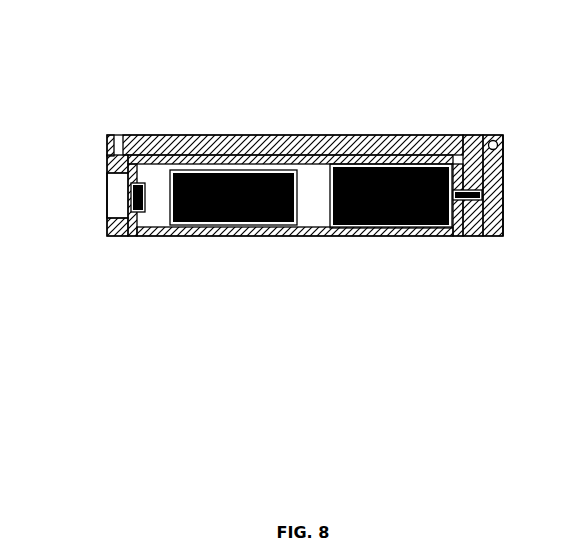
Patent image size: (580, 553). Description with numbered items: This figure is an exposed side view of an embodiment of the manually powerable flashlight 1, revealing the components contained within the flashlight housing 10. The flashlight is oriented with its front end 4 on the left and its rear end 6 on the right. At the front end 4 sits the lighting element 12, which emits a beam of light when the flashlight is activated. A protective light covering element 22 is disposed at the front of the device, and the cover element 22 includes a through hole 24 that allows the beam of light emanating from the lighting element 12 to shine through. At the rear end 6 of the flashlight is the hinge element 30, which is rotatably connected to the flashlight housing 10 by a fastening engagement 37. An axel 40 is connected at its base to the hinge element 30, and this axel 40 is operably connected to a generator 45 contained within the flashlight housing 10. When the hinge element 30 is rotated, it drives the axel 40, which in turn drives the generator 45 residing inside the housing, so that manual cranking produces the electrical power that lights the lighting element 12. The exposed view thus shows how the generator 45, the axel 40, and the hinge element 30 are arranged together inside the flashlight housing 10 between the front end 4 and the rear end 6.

The manually powerable flashlight 1 is at (278, 118).
The front end 4 is at (89, 248).
The rear end 6 is at (530, 250).
The flashlight housing 10 is at (407, 236).
The lighting element 12 is at (140, 200).
The protective light covering element 22 is at (107, 160).
The through hole 24 is at (115, 195).
The hinge element 30 is at (473, 172).
The fastening engagement 37 is at (500, 135).
The axel 40 is at (467, 197).
The generator 45 is at (387, 193).